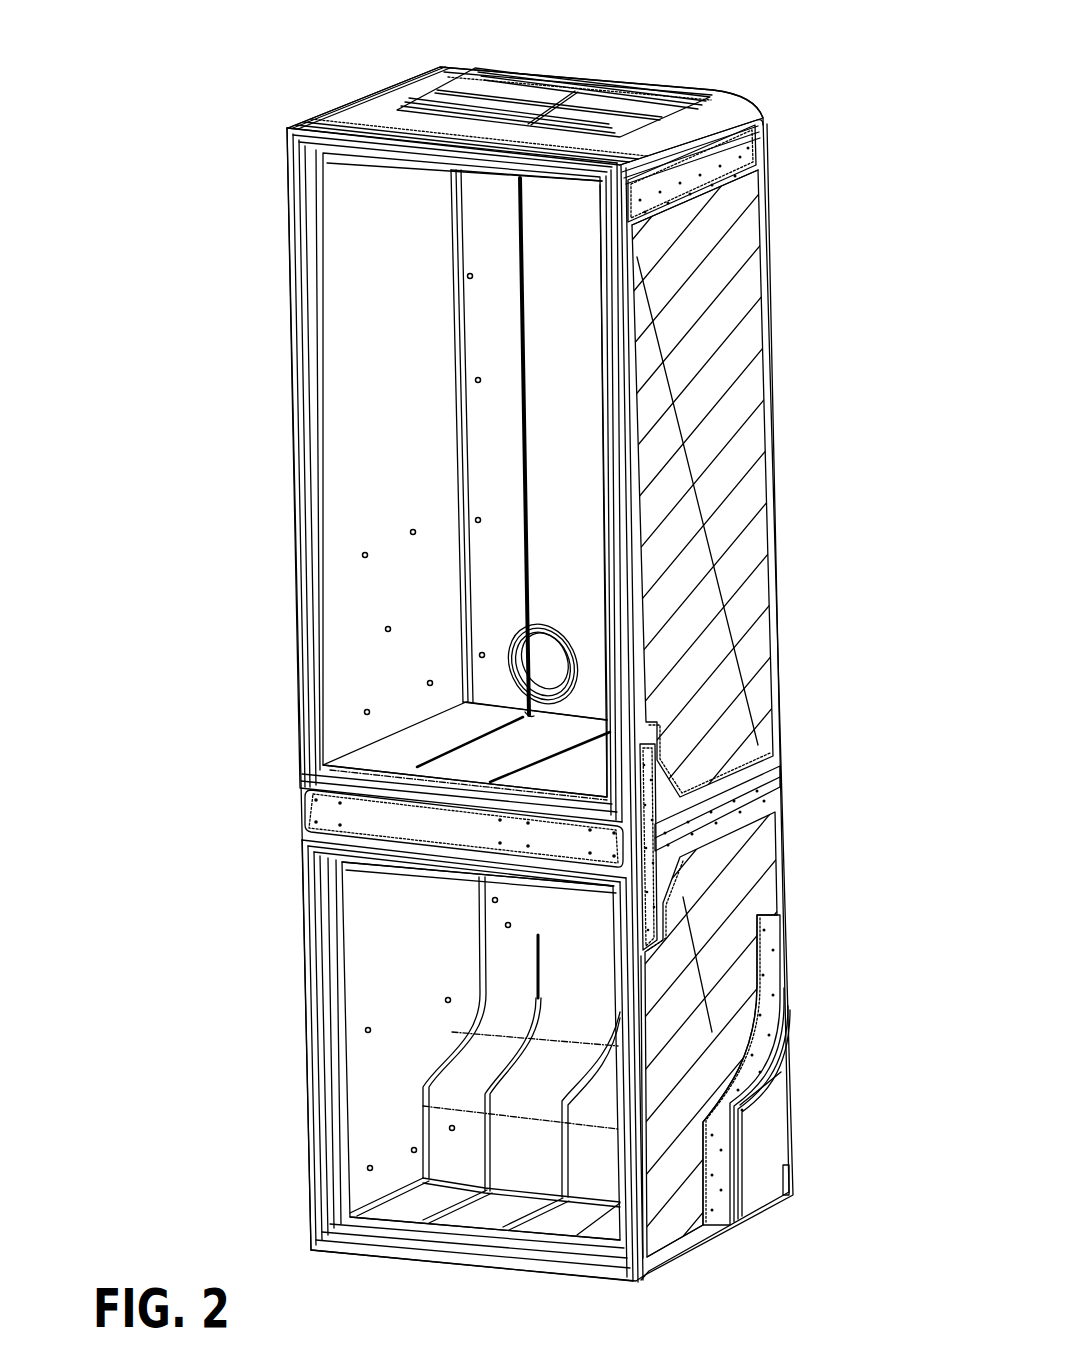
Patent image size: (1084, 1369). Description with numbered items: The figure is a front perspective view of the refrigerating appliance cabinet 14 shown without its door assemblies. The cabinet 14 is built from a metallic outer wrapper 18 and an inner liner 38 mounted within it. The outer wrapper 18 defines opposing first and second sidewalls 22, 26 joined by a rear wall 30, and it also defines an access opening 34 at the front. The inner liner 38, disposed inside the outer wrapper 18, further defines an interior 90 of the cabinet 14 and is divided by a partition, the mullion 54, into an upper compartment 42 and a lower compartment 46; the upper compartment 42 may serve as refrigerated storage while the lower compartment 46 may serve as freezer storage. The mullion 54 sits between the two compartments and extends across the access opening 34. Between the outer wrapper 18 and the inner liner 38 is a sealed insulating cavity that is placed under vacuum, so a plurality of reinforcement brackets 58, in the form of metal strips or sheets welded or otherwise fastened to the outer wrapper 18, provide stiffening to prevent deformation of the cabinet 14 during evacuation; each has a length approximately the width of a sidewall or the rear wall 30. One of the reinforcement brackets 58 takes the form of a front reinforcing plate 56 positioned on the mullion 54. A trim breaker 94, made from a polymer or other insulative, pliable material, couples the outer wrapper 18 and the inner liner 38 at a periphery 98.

The cabinet 14 is at (784, 54).
The outer wrapper 18 is at (738, 237).
The first sidewall 22 is at (378, 93).
The second sidewall 26 is at (740, 183).
The rear wall 30 is at (597, 76).
The access opening 34 is at (382, 495).
The inner liner 38 is at (373, 310).
The upper compartment 42 is at (397, 360).
The lower compartment 46 is at (396, 953).
The mullion 54 is at (397, 834).
The front reinforcing plate 56 is at (535, 836).
The reinforcement brackets 58 is at (538, 64).
The interior 90 is at (556, 360).
The trim breaker 94 is at (318, 1028).
The periphery 98 is at (302, 1114).